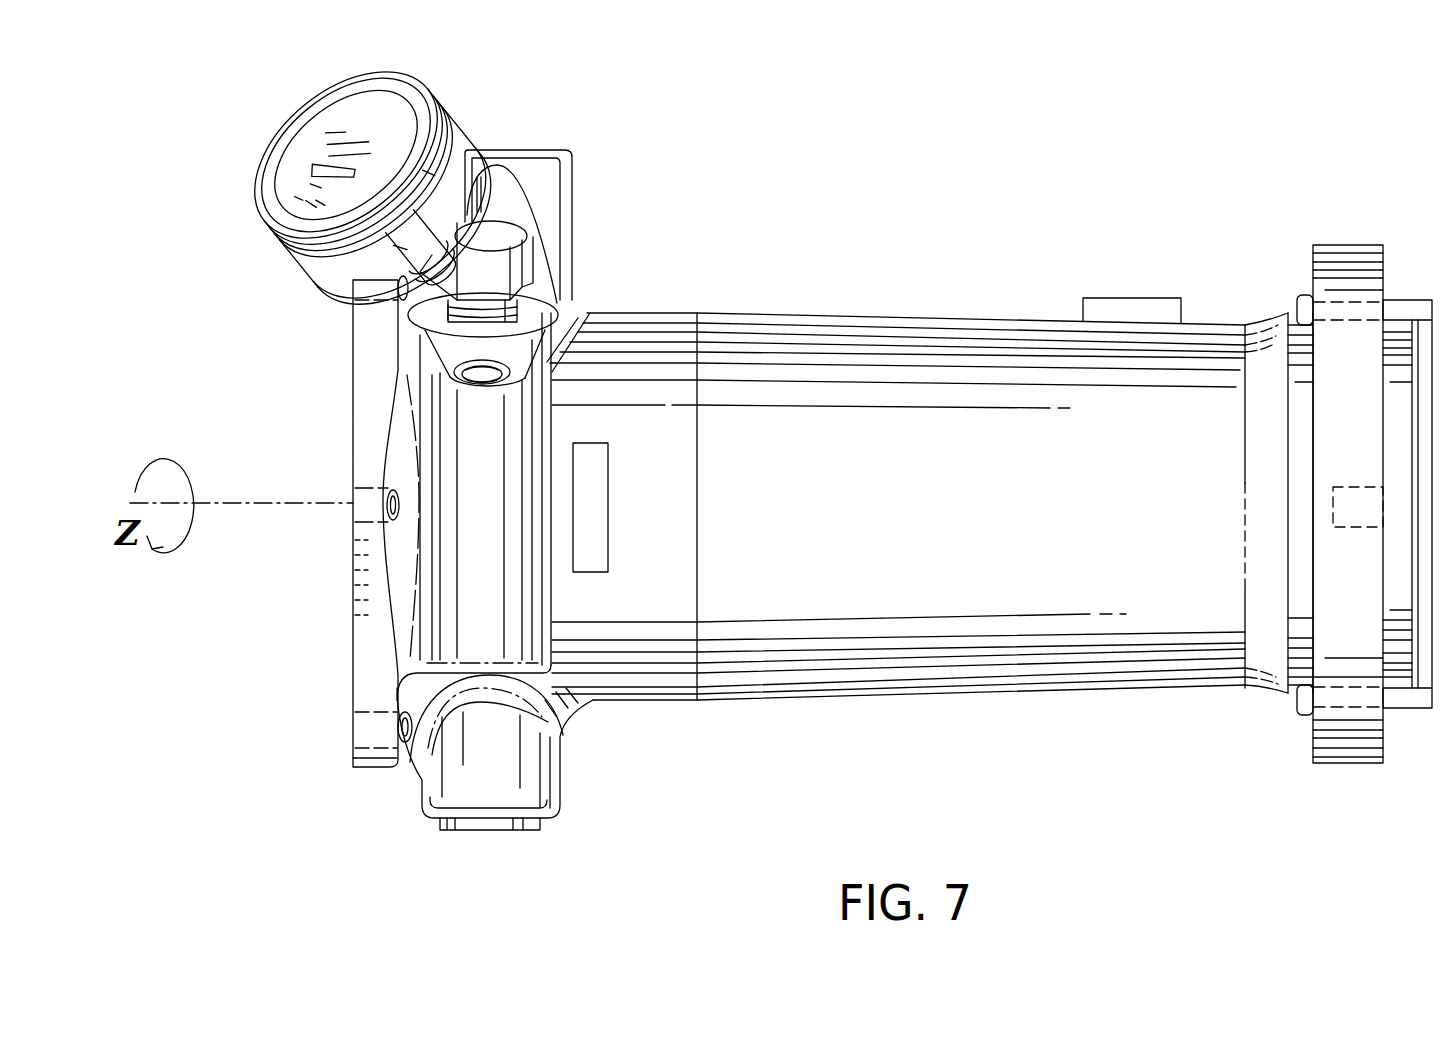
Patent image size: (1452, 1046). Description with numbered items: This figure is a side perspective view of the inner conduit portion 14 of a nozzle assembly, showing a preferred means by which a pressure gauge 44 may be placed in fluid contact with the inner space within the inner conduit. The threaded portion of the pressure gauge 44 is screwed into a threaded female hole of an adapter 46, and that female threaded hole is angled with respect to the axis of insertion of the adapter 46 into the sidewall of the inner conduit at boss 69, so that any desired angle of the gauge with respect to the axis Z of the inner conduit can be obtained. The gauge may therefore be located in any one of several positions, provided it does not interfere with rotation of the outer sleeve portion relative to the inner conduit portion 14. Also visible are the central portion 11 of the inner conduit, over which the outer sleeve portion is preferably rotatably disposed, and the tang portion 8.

The tang portion 8 is at (1127, 297).
The central portion 11 is at (1290, 735).
The inner conduit portion 14 is at (888, 298).
The pressure gauge 44 is at (470, 118).
The adapter 46 is at (490, 235).
The boss 69 is at (543, 303).